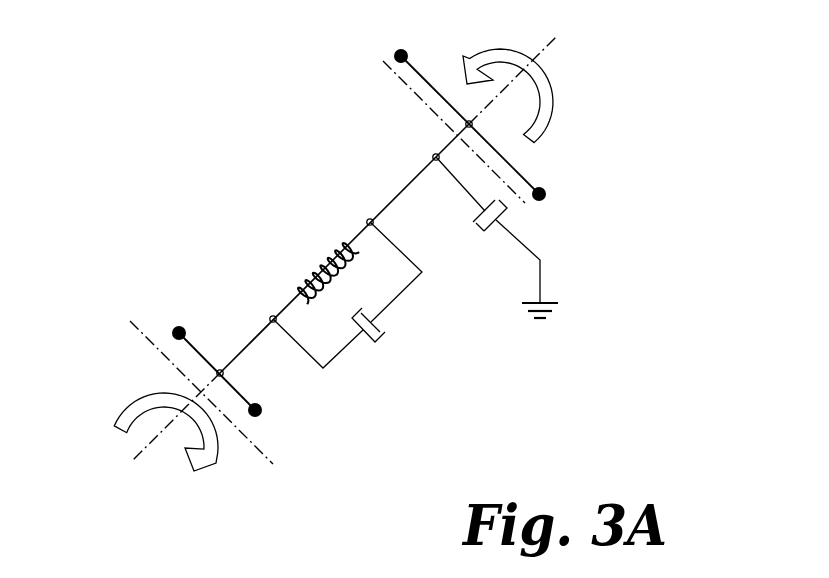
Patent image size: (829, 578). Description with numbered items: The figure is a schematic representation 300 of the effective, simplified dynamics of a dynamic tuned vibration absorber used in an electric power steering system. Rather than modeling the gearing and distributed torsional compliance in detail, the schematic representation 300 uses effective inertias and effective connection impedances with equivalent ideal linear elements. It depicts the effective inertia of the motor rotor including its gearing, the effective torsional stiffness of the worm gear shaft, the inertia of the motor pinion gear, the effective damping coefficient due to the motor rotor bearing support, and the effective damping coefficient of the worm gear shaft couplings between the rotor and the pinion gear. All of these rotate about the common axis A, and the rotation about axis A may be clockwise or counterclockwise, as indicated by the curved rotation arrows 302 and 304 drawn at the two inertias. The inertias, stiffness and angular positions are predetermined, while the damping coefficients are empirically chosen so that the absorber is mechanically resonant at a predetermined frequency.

The schematic representation 300 is at (170, 165).
The primary rotation direction 302 is at (135, 407).
The secondary rotation direction 304 is at (543, 115).
The axis A is at (546, 50).